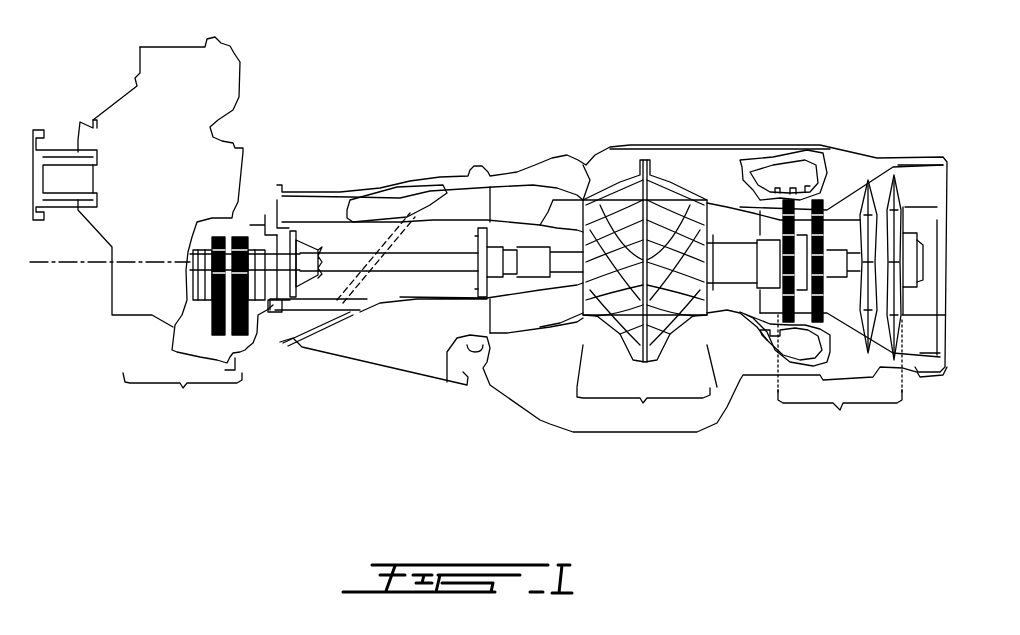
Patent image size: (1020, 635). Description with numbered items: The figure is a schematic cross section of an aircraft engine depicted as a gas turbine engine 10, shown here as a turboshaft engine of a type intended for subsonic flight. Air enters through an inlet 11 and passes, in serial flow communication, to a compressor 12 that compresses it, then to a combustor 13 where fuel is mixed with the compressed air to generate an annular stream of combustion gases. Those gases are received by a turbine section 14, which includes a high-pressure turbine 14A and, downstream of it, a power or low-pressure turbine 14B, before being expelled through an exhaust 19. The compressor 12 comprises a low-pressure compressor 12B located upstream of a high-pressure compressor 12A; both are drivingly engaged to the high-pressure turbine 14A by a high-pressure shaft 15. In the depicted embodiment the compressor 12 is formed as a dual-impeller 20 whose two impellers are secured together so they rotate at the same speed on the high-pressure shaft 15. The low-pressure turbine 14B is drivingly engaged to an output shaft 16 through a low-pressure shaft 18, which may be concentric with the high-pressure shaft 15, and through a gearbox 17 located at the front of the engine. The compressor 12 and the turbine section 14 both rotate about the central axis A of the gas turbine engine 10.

The gas turbine engine 10 is at (430, 98).
The inlet 11 is at (402, 347).
The compressor 12 is at (654, 242).
The high-pressure compressor 12A is at (673, 211).
The low-pressure compressor 12B is at (621, 210).
The combustor 13 is at (793, 170).
The turbine section 14 is at (825, 254).
The high-pressure turbine 14A is at (830, 198).
The low-pressure turbine 14B is at (910, 193).
The high-pressure shaft 15 is at (417, 257).
The output shaft 16 is at (68, 158).
The gearbox 17 is at (183, 230).
The low-pressure shaft 18 is at (342, 260).
The exhaust 19 is at (917, 340).
The dual-impeller 20 is at (609, 344).
The central axis A is at (55, 263).